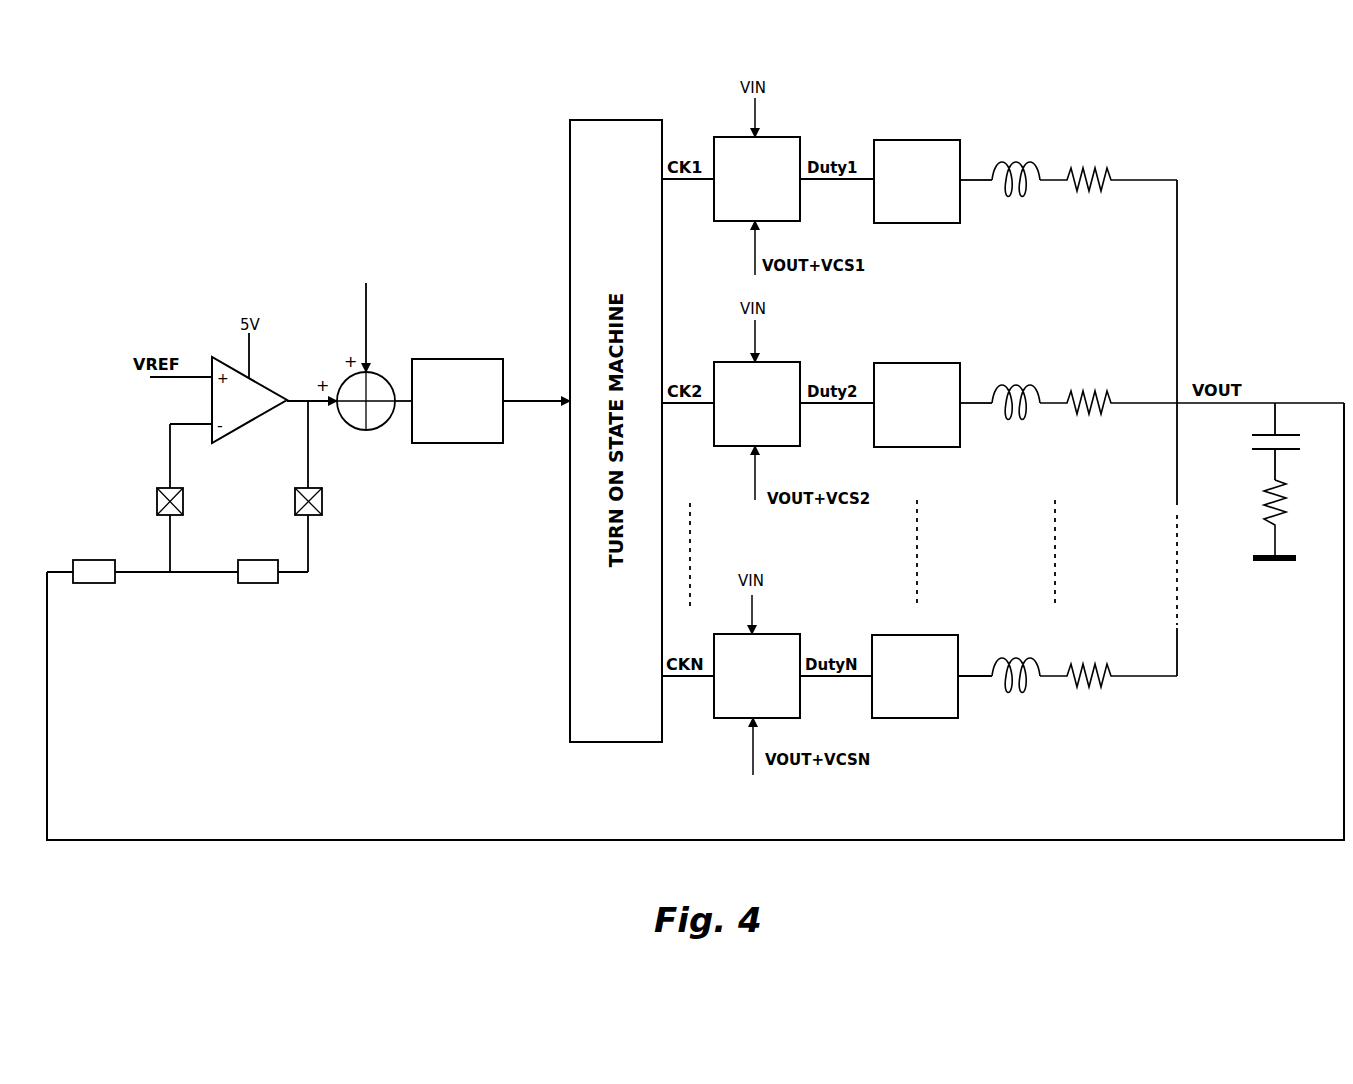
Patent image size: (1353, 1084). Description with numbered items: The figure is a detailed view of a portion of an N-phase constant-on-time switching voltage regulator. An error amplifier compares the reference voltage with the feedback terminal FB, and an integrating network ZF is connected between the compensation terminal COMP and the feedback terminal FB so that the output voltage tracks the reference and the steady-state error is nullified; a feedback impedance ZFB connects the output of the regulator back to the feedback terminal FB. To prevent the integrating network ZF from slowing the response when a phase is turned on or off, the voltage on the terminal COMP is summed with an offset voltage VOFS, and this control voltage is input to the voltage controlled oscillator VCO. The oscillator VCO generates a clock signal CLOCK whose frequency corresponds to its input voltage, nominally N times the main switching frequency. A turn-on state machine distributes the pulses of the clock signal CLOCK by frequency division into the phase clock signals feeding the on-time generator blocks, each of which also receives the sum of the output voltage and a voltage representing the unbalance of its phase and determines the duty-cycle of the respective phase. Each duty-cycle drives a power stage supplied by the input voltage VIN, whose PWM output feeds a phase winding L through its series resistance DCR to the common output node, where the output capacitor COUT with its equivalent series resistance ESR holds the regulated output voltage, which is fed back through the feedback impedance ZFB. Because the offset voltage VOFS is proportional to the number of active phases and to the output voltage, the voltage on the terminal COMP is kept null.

The feedback terminal FB is at (155, 509).
The compensation terminal COMP is at (275, 509).
The feedback impedance ZFB is at (94, 558).
The integrating network ZF is at (258, 584).
The offset voltage VOFS is at (368, 313).
The voltage controlled oscillator VCO is at (457, 401).
The clock signal CLOCK is at (536, 390).
The input voltage VIN is at (916, 429).
The phase winding L is at (1016, 410).
The winding DC resistance DCR is at (1192, 415).
The output capacitor COUT is at (1246, 441).
The equivalent series resistance ESR is at (1251, 519).